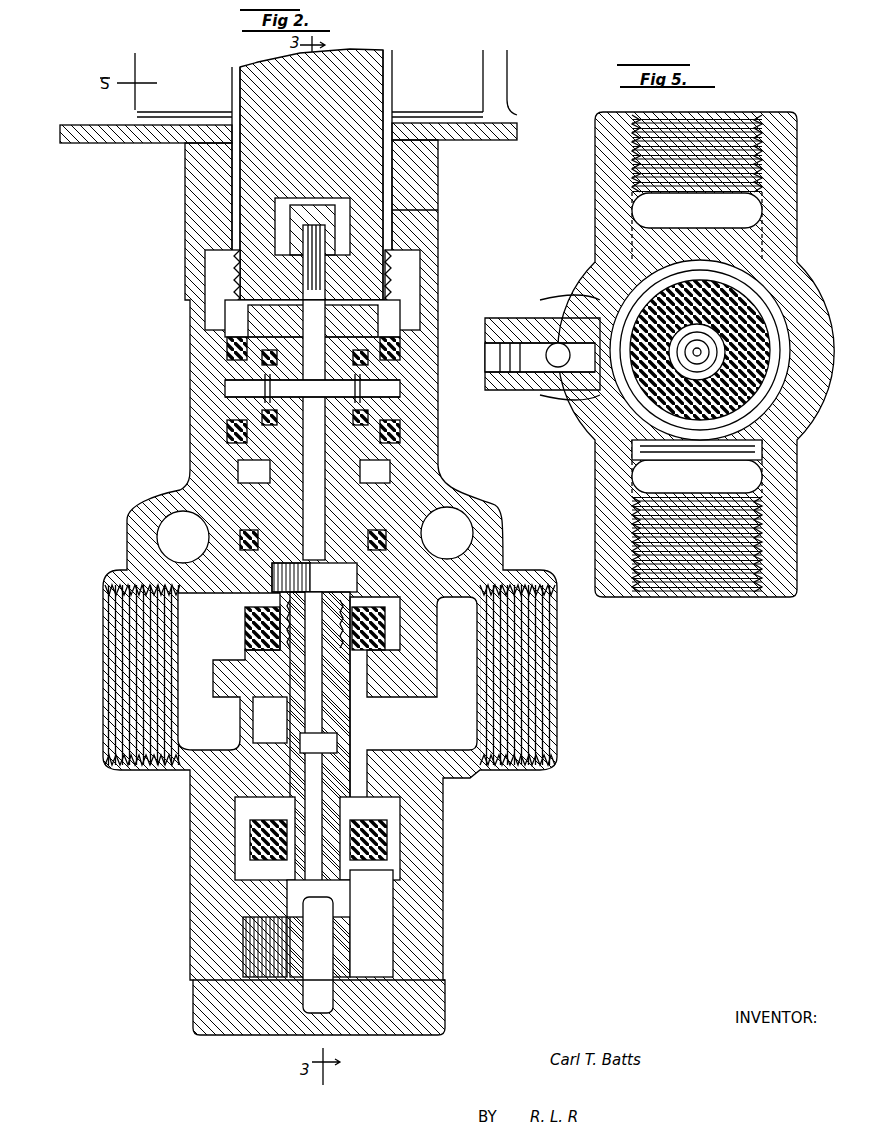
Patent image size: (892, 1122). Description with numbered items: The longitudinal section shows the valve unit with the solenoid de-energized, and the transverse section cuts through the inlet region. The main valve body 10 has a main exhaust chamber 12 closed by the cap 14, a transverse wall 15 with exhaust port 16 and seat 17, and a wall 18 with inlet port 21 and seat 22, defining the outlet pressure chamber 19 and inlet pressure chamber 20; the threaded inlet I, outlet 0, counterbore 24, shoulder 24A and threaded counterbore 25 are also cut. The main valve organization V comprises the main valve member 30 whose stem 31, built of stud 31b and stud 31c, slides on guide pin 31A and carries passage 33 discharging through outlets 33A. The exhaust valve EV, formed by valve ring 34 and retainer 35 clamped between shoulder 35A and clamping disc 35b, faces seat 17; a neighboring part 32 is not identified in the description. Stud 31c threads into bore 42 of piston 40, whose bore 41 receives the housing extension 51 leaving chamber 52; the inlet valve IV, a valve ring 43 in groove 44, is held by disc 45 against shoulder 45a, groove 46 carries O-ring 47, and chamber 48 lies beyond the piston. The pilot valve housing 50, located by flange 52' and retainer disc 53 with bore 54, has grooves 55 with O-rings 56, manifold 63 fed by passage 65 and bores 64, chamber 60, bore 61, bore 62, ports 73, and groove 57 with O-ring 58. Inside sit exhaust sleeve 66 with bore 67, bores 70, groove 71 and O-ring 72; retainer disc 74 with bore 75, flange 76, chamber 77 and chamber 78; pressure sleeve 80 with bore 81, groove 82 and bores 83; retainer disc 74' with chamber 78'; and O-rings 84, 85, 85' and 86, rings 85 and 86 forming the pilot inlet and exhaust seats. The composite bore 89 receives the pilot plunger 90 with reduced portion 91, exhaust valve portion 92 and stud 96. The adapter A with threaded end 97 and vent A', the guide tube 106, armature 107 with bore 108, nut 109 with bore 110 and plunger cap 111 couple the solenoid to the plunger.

In FIG. 2, the armature 107 is at (360, 80).
In FIG. 2, the guide tube 106 is at (392, 170).
In FIG. 2, the internally threaded axial bore 108 is at (385, 200).
In FIG. 2, the attachment shank or stud 96 is at (438, 210).
In FIG. 2, the vent passage or duct A' is at (458, 234).
In FIG. 2, the cap 111 is at (290, 222).
In FIG. 2, the axial bore 110 is at (245, 265).
In FIG. 2, the pilot valve plunger 90 is at (303, 280).
In FIG. 2, the cylindrical chamber 60 is at (225, 310).
In FIG. 2, the nut 109 is at (240, 300).
In FIG. 2, the externally threaded reduced diameter end 97 is at (395, 270).
In FIG. 2, the axial bore 54 is at (380, 290).
In FIG. 2, the retainer disc 53 is at (370, 302).
In FIG. 2, the counterbore 25 is at (355, 335).
In FIG. 2, the packing ring 85' is at (417, 338).
In FIG. 2, the adapter A is at (164, 305).
In FIG. 2, the axial bore 75 is at (168, 475).
In FIG. 2, the retainer disc 74' is at (208, 328).
In FIG. 2, the flange 52' is at (197, 333).
In FIG. 2, the shoulder 24A is at (230, 345).
In FIG. 2, the grooves 55 is at (200, 366).
In FIG. 2, the sealing rings 56 is at (268, 357).
In FIG. 2, the packing ring 84 is at (265, 390).
In FIG. 2, the annular chamber 78' is at (194, 379).
In FIG. 2, the pressure sleeve 80 is at (268, 380).
In FIG. 2, the bores 83 is at (225, 392).
In FIG. 2, the annular groove 63 is at (262, 420).
In FIG. 2, the packing ring 85 is at (211, 445).
In FIG. 2, the exhaust sleeve 66 is at (245, 470).
In FIG. 2, the axial bore 67 is at (270, 492).
In FIG. 2, the sealing ring groove 46 is at (215, 533).
In FIG. 2, the groove 57 is at (245, 540).
In FIG. 2, the axial extension 51 is at (272, 560).
In FIG. 2, the chamber 52 is at (181, 565).
In FIG. 2, the circular chamber 77 is at (314, 345).
In FIG. 2, the axial bore 81 is at (311, 370).
In FIG. 2, the manifold groove 82 is at (374, 370).
In FIG. 2, the axial bore 89 is at (311, 453).
In FIG. 2, the annular groove 71 is at (311, 497).
In FIG. 2, the ports 73 is at (285, 472).
In FIG. 2, the chamber 61 is at (345, 472).
In FIG. 2, the exhaust valve forming portion 92 is at (317, 553).
In FIG. 2, the axial bore 62 is at (321, 577).
In FIG. 2, the counterbore 24 is at (400, 365).
In FIG. 2, the radial bores 64 is at (400, 388).
In FIG. 2, the annular flange 76 is at (360, 405).
In FIG. 2, the annular chamber 78 is at (420, 415).
In FIG. 2, the sealing ring retainer 74 is at (436, 432).
In FIG. 2, the reduced diameter portion 91 is at (395, 452).
In FIG. 2, the pilot valve housing 50 is at (390, 466).
In FIG. 2, the chamber 48 is at (345, 450).
In FIG. 2, the bores 70 is at (345, 482).
In FIG. 2, the sealing ring 72 is at (340, 495).
In FIG. 2, the sealing ring 86 is at (340, 505).
In FIG. 2, the O-ring 47 is at (392, 533).
In FIG. 2, the packing ring 58 is at (386, 540).
In FIG. 2, the axial bore 41 is at (357, 570).
In FIG. 2, the piston 40 is at (400, 610).
In FIG. 5, the piston 40 is at (630, 380).
In FIG. 2, the annular groove 44 is at (385, 628).
In FIG. 5, the annular groove 44 is at (795, 400).
In FIG. 2, the valve ring 43 is at (370, 640).
In FIG. 5, the valve ring 43 is at (735, 400).
In FIG. 2, the internally threaded bore 42 is at (290, 600).
In FIG. 2, the inlet valve IV is at (222, 630).
In FIG. 2, the annular seat 22 is at (275, 653).
In FIG. 2, the retaining disc 45 is at (290, 665).
In FIG. 2, the shoulder 45a is at (290, 670).
In FIG. 2, the outer stud member 31c is at (253, 710).
In FIG. 5, the outer stud member 31c is at (680, 370).
In FIG. 2, the inlet I is at (115, 695).
In FIG. 5, the inlet I is at (712, 583).
In FIG. 2, the wall 18 is at (405, 672).
In FIG. 2, the inlet port 21 is at (355, 685).
In FIG. 2, the exhaust port 16 is at (360, 750).
In FIG. 2, the outlet 0 is at (530, 735).
In FIG. 5, the outlet 0 is at (640, 112).
In FIG. 2, the outlet pressure chamber 19 is at (473, 772).
In FIG. 5, the outlet pressure chamber 19 is at (650, 208).
In FIG. 2, the transverse wall 15 is at (392, 780).
In FIG. 2, the annular seat 17 is at (385, 797).
In FIG. 2, the valve ring 34 is at (387, 828).
In FIG. 2, the main valve organization V is at (300, 742).
In FIG. 2, the clamping disc 35b is at (270, 805).
In FIG. 2, the main exhaust chamber 12 is at (268, 835).
In FIG. 2, the main valve body 10 is at (193, 870).
In FIG. 5, the main valve body 10 is at (612, 278).
In FIG. 2, the exhaust valve EV is at (285, 883).
In FIG. 2, the main valve member 30 is at (287, 900).
In FIG. 2, the outlet passage 33A is at (287, 905).
In FIG. 2, the valve stem 31 is at (287, 930).
In FIG. 2, the shoulder 35A is at (325, 853).
In FIG. 2, the pressure fluid passage 33 is at (330, 888).
In FIG. 5, the pressure fluid passage 33 is at (688, 330).
In FIG. 2, the coil 32 is at (385, 853).
In FIG. 2, the valve ring retainer 35 is at (393, 872).
In FIG. 2, the stud member 31b is at (333, 940).
In FIG. 2, the closing nut or cap 14 is at (213, 1037).
In FIG. 2, the guide pin 31A is at (312, 990).
In FIG. 5, the fluid flow passage 65 is at (556, 358).
In FIG. 5, the inlet pressure chamber 20 is at (625, 400).